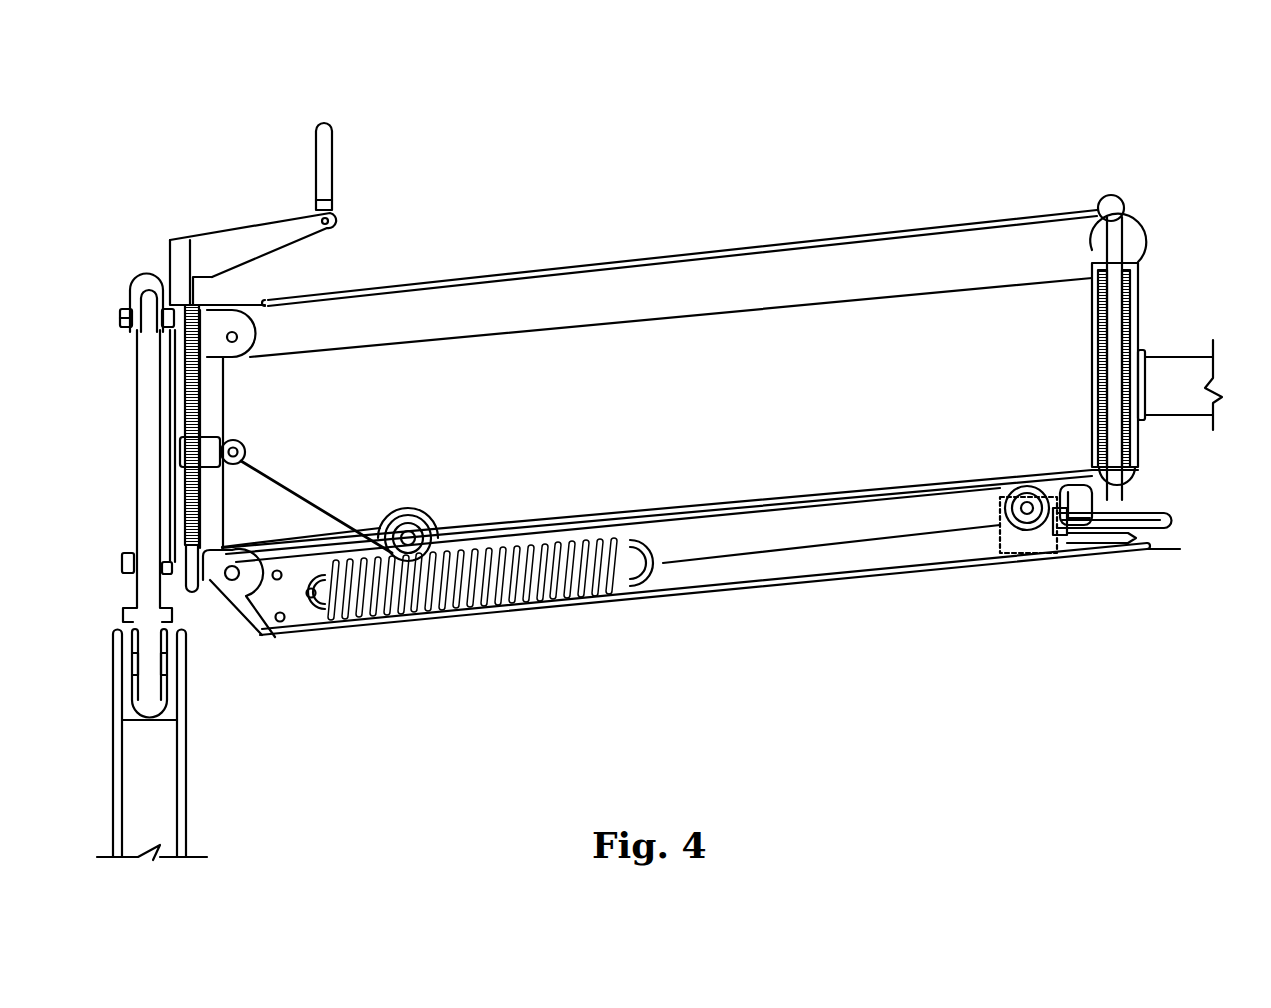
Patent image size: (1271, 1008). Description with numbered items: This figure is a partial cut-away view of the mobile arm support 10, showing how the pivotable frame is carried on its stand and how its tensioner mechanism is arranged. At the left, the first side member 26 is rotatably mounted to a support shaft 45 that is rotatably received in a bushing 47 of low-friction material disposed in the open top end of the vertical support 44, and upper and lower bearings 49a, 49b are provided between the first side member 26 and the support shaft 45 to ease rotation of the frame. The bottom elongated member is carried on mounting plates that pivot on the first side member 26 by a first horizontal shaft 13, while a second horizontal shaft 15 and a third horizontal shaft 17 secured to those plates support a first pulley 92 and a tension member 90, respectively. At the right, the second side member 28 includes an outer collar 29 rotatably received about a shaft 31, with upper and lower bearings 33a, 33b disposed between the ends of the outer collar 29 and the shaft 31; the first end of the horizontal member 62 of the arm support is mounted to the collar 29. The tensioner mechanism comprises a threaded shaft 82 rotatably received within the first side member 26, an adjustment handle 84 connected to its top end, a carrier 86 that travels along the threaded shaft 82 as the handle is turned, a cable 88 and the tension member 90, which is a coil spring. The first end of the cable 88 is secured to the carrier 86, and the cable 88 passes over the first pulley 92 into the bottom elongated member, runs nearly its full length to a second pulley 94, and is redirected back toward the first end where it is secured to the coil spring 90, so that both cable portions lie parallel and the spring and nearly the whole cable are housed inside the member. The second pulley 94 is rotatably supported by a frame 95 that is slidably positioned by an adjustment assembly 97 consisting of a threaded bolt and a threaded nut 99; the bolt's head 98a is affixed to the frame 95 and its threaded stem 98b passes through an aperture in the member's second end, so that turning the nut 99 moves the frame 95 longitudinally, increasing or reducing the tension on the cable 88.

The mobile arm support 10 is at (468, 150).
The first horizontal shaft 13 is at (230, 585).
The second horizontal shaft 15 is at (420, 540).
The third horizontal shaft 17 is at (312, 605).
The first side member 26 is at (220, 395).
The second side member 28 is at (1080, 337).
The outer collar 29 is at (1140, 443).
The shaft 31 is at (1098, 302).
The upper bearing 33a is at (1135, 268).
The lower bearing 33b is at (1138, 462).
The vertical support 44 is at (186, 838).
The support shaft 45 is at (136, 463).
The bushing 47 is at (167, 693).
The upper bearing 49a is at (130, 312).
The lower bearing 49b is at (126, 577).
The horizontal member 62 is at (1163, 355).
The threaded shaft 82 is at (186, 376).
The adjustment handle 84 is at (317, 160).
The carrier 86 is at (250, 452).
The cable 88 is at (330, 504).
The tension member 90 is at (489, 620).
The first pulley 92 is at (406, 518).
The second pulley 94 is at (1030, 538).
The frame 95 is at (1010, 550).
The adjustment assembly 97 is at (1184, 552).
The head 98a is at (1068, 540).
The threaded stem 98b is at (1127, 543).
The threaded nut 99 is at (1172, 520).